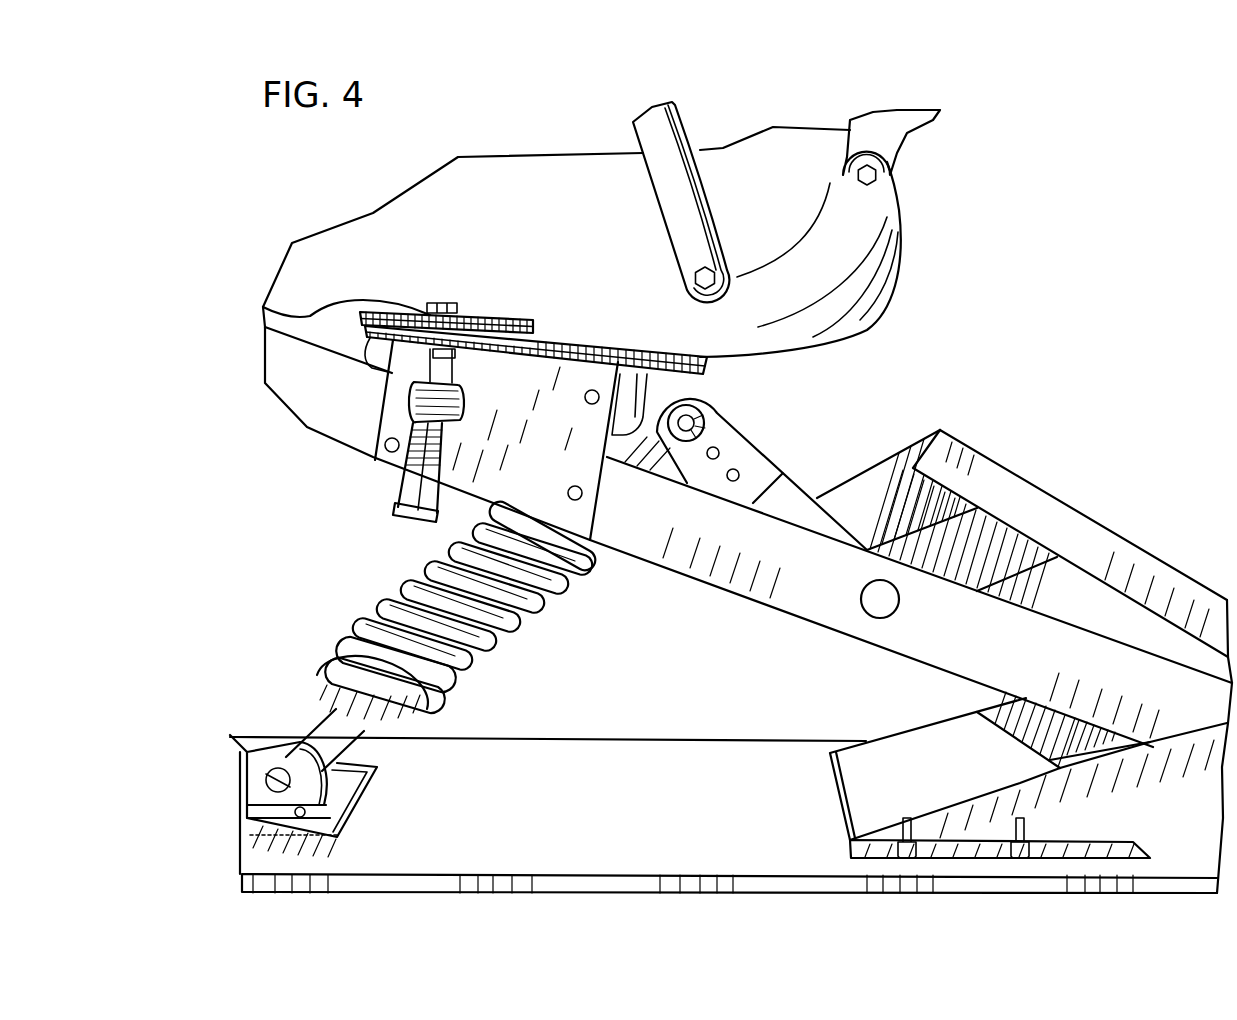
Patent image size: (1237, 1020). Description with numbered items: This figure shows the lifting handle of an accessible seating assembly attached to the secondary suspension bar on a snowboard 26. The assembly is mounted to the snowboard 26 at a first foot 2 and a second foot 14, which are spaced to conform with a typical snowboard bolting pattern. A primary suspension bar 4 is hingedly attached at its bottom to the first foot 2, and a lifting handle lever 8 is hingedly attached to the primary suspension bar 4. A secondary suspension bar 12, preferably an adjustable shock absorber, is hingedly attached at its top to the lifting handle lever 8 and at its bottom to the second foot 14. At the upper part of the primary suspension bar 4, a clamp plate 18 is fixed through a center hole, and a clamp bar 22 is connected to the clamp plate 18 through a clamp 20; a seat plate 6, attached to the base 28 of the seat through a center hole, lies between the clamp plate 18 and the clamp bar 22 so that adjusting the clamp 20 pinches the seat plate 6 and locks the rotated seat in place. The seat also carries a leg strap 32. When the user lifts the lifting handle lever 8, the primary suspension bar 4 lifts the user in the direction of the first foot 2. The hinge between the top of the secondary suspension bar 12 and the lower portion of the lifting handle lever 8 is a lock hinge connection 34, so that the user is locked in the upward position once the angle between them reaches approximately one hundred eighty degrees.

The first foot 2 is at (923, 747).
The primary suspension bar 4 is at (797, 595).
The seat plate 6 is at (700, 357).
The lifting handle lever 8 is at (1073, 515).
The secondary suspension bar 12 is at (533, 612).
The second foot 14 is at (377, 773).
The clamp plate 18 is at (376, 336).
The clamp 20 is at (405, 488).
The clamp bar 22 is at (263, 302).
The snowboard 26 is at (647, 763).
The base 28 is at (907, 268).
The leg strap 32 is at (892, 152).
The lock hinge connection 34 is at (703, 421).